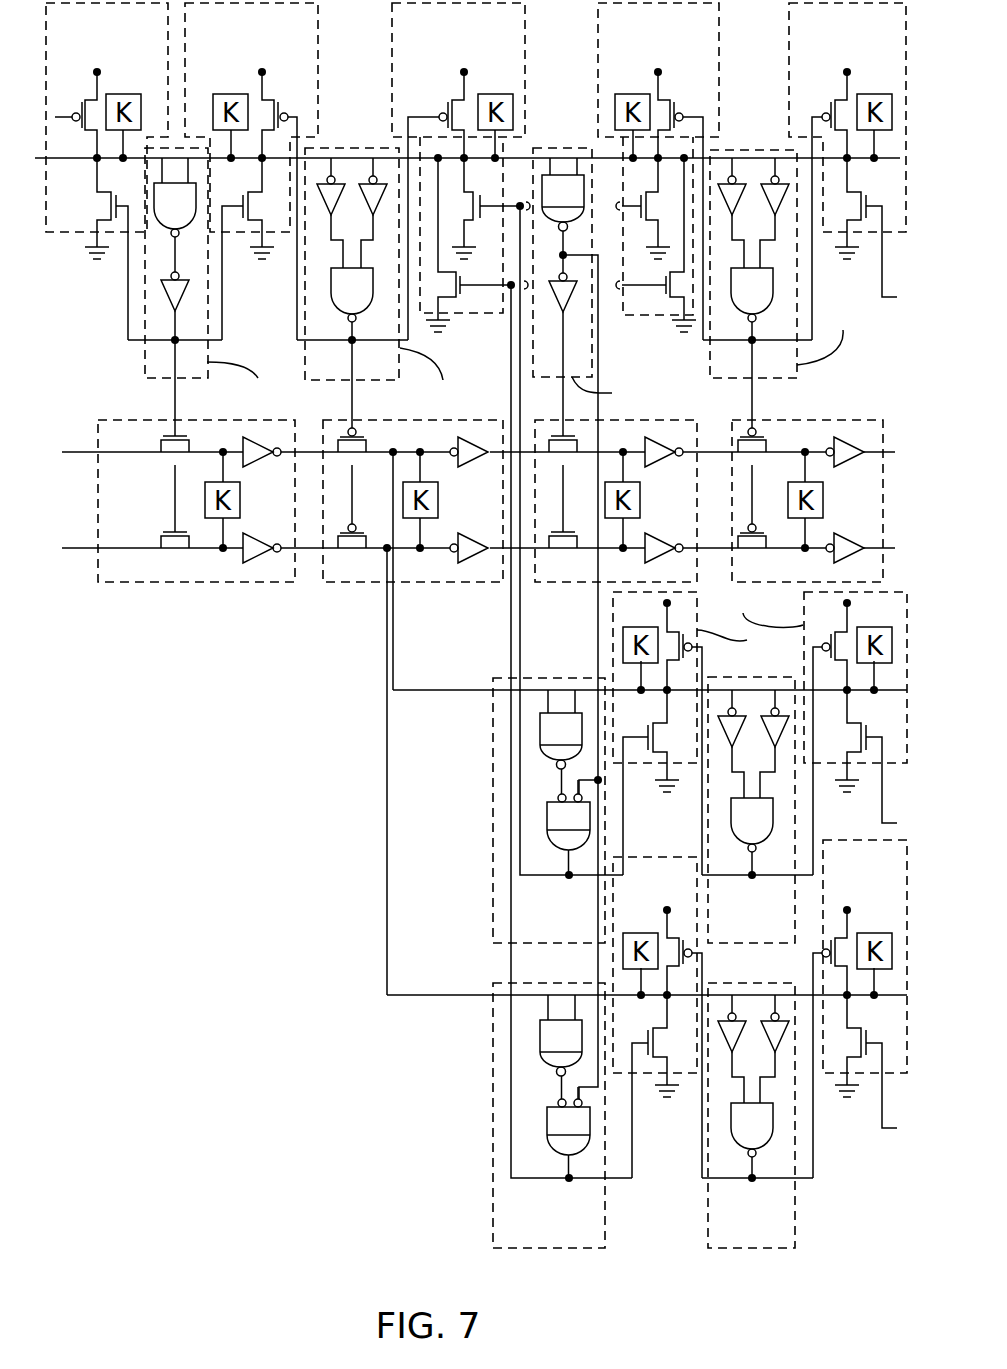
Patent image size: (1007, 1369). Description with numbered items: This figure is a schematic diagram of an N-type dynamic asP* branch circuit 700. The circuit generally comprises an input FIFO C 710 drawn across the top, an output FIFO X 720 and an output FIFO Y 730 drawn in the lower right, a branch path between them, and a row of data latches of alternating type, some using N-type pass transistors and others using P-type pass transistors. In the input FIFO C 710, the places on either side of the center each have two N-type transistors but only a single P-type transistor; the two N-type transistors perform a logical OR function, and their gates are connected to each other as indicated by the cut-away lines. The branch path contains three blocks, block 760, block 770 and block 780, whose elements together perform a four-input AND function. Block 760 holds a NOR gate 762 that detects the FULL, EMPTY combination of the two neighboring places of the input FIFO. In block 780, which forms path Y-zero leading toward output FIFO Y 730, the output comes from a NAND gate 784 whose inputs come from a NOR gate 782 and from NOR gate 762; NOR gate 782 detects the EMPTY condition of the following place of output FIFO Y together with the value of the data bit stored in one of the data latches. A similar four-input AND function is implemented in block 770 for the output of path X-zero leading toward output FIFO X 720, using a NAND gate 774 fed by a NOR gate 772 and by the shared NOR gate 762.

The N-type dynamic asP* branch circuit 700 is at (163, 1006).
The input FIFO C 710 is at (110, 334).
The output FIFO X 720 is at (372, 798).
The output FIFO Y 730 is at (440, 1108).
The block 760 is at (562, 262).
The NOR gate 762 is at (563, 203).
The block 770 is at (510, 810).
The NOR gate 772 is at (561, 741).
The NAND gate 774 is at (568, 822).
The block 780 is at (511, 1115).
The NOR gate 782 is at (561, 1048).
The NAND gate 784 is at (568, 1127).